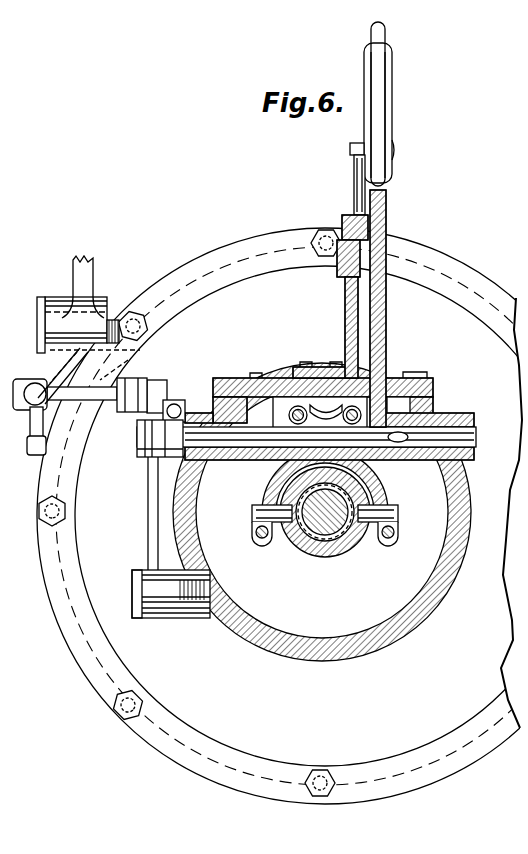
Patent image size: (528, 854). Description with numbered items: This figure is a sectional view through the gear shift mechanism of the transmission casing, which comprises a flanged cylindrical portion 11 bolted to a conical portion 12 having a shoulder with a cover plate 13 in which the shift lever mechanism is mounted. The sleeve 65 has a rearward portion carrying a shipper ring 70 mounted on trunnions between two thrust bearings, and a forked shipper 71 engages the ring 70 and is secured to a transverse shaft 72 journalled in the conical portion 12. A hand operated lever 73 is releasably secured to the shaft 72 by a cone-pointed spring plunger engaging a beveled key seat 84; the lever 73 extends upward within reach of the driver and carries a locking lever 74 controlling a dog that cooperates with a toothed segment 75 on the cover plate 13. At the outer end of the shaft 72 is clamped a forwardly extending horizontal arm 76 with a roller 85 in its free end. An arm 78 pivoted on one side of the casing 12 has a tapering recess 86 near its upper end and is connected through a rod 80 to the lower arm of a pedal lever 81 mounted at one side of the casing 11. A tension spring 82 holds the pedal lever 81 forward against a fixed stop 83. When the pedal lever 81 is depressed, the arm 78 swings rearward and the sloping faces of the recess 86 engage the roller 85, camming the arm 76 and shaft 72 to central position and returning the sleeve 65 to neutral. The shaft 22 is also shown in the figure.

The flanged cylindrical portion 11 is at (178, 263).
The conical portion 12 is at (290, 650).
The cover plate 13 is at (267, 378).
The shaft 22 is at (330, 522).
The sleeve 65 is at (312, 540).
The shipper ring 70 is at (362, 548).
The forked shipper 71 is at (384, 488).
The transverse shaft 72 is at (258, 448).
The hand operated lever 73 is at (381, 122).
The locking lever 74 is at (393, 108).
The toothed segment 75 is at (345, 318).
The horizontal arm 76 is at (181, 404).
The arm 78 is at (148, 516).
The rod 80 is at (101, 400).
The pedal lever 81 is at (73, 268).
The tension spring 82 is at (88, 384).
The fixed stop 83 is at (36, 455).
The beveled key seat 84 is at (416, 424).
The roller 85 is at (145, 436).
The tapering recess 86 is at (146, 455).